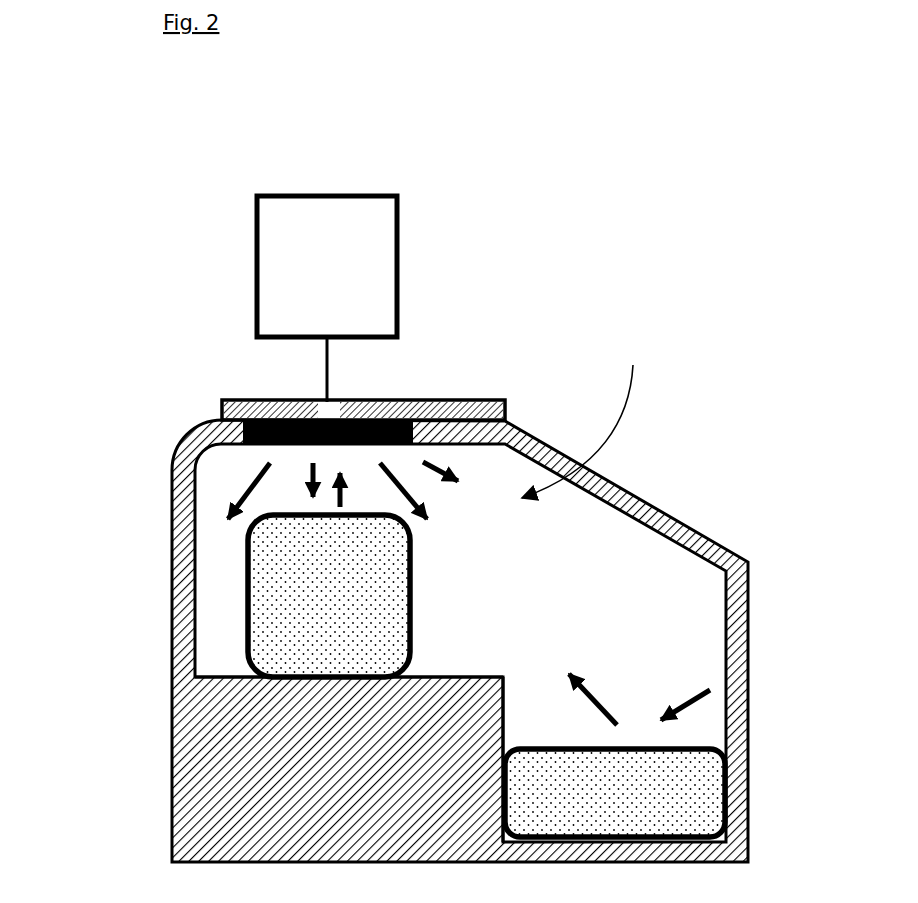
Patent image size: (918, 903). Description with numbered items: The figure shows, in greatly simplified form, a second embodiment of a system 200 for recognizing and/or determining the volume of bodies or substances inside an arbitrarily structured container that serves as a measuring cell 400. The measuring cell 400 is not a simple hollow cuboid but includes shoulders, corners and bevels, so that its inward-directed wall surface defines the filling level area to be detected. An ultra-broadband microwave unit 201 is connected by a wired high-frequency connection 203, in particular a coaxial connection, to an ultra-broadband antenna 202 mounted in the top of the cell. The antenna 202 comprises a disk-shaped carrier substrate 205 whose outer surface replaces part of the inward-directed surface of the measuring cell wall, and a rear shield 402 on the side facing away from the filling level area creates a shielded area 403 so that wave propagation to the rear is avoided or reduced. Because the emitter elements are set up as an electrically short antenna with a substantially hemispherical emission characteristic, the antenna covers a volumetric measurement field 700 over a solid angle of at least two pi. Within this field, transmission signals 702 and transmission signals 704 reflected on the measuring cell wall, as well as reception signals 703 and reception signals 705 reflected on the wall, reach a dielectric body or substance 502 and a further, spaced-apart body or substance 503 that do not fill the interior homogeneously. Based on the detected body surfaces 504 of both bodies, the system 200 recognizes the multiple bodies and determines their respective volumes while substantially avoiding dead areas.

The system for recognizing and/or determining the volume of bodies or substances 200 is at (545, 298).
The ultra-broadband microwave unit 201 is at (399, 275).
The ultra-broadband antenna 202 is at (395, 398).
The high-frequency connection 203 is at (327, 385).
The carrier substrate 205 is at (250, 452).
The measuring cell 400 is at (650, 500).
The shield 402 is at (440, 398).
The shielded area 403 is at (255, 398).
The dielectric body or substance 502 is at (388, 648).
The nth dielectric body or substance 503 is at (585, 765).
The surface of a body or substance 504 is at (326, 520).
The volumetric measurement field 700 is at (586, 420).
The transmission signal 702 is at (237, 487).
The reception signal 703 is at (343, 480).
The reflected transmission signal 704 is at (690, 700).
The reflected reception signal 705 is at (585, 690).